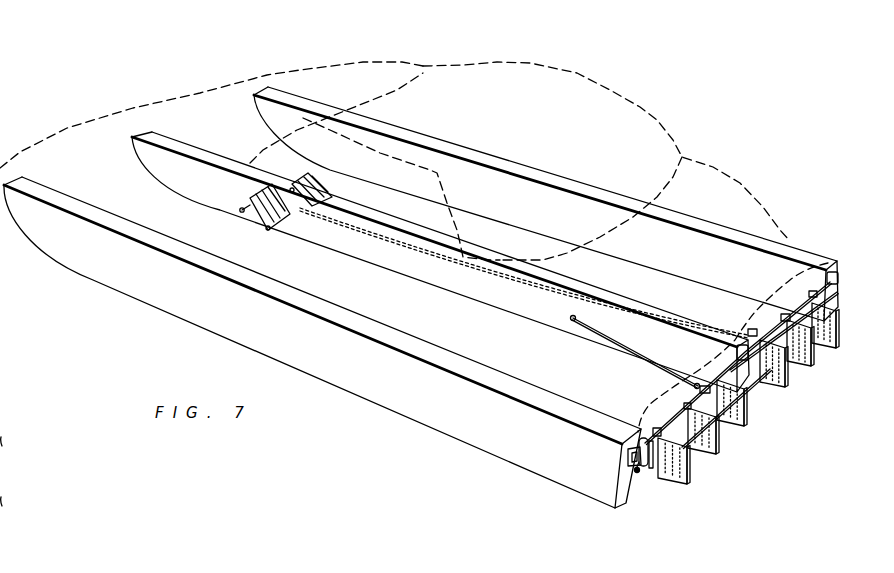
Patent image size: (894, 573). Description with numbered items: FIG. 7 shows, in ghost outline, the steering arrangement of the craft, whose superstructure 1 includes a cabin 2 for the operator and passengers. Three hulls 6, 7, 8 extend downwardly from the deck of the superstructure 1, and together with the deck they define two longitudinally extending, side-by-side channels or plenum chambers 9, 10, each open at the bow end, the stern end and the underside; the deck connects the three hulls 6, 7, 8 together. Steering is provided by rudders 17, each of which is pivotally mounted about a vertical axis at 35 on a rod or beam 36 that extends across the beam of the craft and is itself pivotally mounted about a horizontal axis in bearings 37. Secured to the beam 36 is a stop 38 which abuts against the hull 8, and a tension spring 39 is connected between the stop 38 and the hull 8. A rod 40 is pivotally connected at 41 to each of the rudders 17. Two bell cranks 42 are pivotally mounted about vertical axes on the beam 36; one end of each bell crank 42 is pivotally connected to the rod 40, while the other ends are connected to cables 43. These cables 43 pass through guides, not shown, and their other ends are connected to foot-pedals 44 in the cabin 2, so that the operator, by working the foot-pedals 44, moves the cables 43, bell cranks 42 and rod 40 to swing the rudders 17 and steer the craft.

The superstructure 1 is at (402, 62).
The cabin 2 is at (577, 73).
The hull 6 is at (267, 112).
The hull 7 is at (150, 160).
The hull 8 is at (55, 248).
The channel or plenum chamber 9 is at (528, 252).
The channel or plenum chamber 10 is at (382, 303).
The rudder 17 is at (825, 328).
The vertical pivot axis mounting 35 is at (657, 429).
The rod or beam 36 is at (685, 403).
The bearing 37 is at (630, 450).
The stop 38 is at (652, 462).
The tension spring 39 is at (639, 473).
The rod 40 is at (758, 381).
The pivotal connection 41 is at (825, 302).
The bell crank 42 is at (812, 349).
The cable 43 is at (633, 350).
The foot-pedal 44 is at (253, 197).